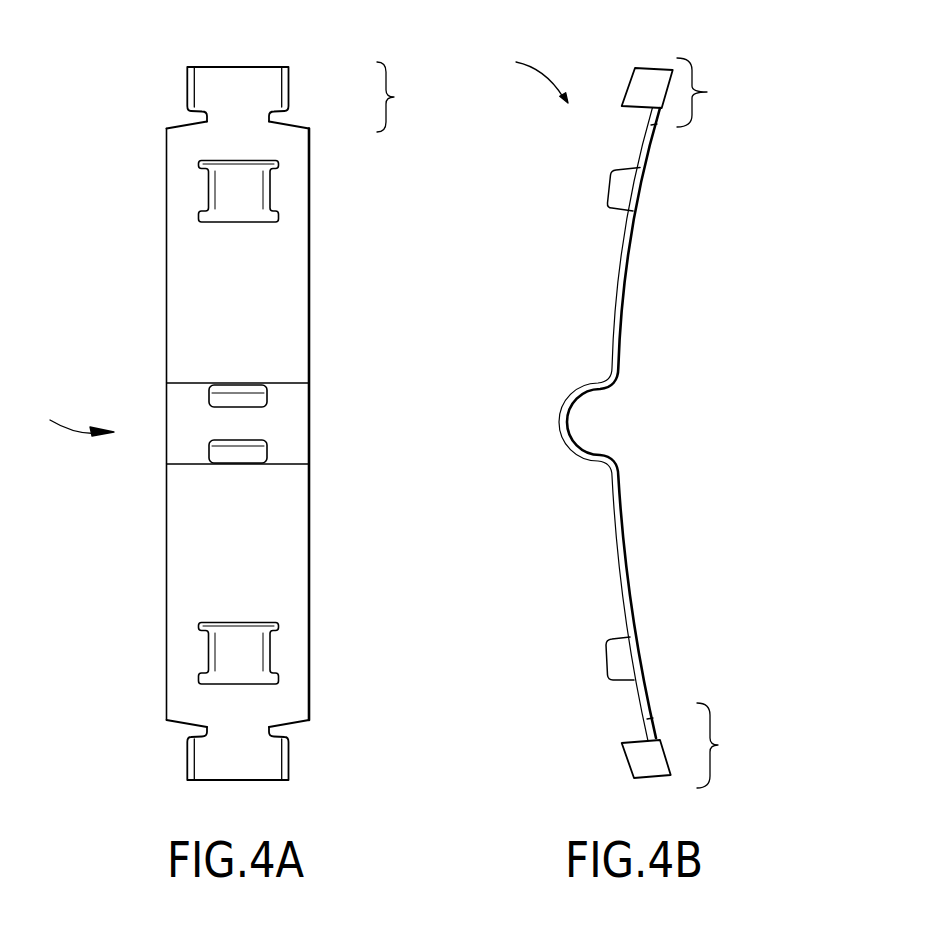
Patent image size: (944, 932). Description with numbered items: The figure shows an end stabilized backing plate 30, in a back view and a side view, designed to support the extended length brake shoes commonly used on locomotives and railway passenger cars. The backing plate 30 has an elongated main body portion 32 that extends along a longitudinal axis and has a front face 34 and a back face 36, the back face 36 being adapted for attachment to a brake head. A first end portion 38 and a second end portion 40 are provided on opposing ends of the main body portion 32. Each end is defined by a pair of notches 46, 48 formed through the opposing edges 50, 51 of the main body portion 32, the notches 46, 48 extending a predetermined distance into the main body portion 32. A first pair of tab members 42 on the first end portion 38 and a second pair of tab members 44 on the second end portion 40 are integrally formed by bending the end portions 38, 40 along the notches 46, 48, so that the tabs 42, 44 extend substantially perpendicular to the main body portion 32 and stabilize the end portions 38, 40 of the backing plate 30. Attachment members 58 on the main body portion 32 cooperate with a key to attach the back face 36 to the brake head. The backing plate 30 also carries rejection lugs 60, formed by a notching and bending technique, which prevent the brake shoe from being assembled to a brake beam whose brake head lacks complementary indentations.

In FIG. 4A, the end stabilized backing plate 30 is at (78, 413).
In FIG. 4B, the end stabilized backing plate 30 is at (530, 70).
In FIG. 4B, the elongated main body portion 32 is at (627, 243).
In FIG. 4B, the front face 34 is at (625, 302).
In FIG. 4A, the back face 36 is at (244, 425).
In FIG. 4B, the back face 36 is at (630, 425).
In FIG. 4A, the first end portion 38 is at (405, 97).
In FIG. 4B, the first end portion 38 is at (711, 92).
In FIG. 4B, the second end portion 40 is at (732, 745).
In FIG. 4A, the first pair of tab members 42 is at (187, 75).
In FIG. 4B, the first pair of tab members 42 is at (645, 80).
In FIG. 4A, the second pair of tab members 44 is at (187, 767).
In FIG. 4B, the second pair of tab members 44 is at (632, 753).
In FIG. 4A, the notches 46 is at (188, 122).
In FIG. 4A, the notches 48 is at (188, 732).
In FIG. 4A, the opposing edge 50 is at (167, 176).
In FIG. 4A, the opposing edge 51 is at (313, 170).
In FIG. 4A, the attachment members 58 is at (243, 403).
In FIG. 4A, the rejection lugs 60 is at (212, 186).
In FIG. 4B, the rejection lugs 60 is at (620, 187).